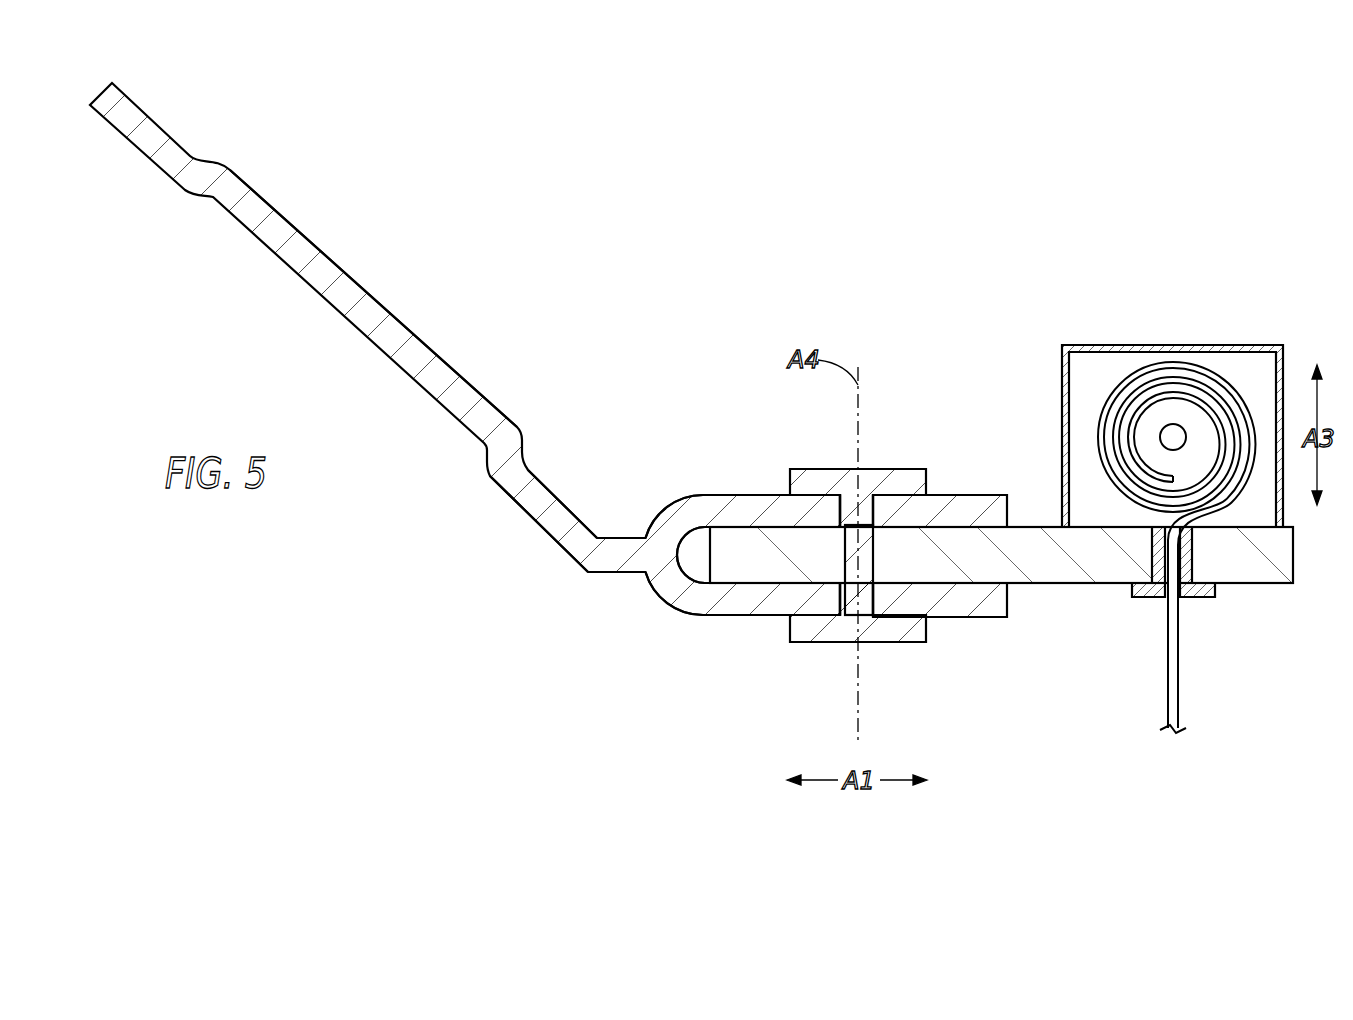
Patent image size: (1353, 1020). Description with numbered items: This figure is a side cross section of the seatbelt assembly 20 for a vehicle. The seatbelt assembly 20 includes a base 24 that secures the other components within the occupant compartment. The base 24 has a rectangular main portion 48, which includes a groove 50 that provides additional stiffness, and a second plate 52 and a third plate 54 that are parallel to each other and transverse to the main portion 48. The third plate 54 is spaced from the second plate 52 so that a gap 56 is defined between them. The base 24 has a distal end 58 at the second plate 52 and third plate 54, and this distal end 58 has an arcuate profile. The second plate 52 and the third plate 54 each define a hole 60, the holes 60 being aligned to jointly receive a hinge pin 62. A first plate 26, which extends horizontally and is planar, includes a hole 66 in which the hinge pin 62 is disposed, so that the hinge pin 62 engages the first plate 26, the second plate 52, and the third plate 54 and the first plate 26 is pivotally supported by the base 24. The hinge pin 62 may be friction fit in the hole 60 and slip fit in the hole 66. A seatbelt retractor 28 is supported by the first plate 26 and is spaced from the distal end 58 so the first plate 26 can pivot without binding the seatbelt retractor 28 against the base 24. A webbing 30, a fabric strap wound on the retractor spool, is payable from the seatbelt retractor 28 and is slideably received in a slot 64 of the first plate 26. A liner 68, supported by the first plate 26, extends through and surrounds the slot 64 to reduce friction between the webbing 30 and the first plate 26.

The seatbelt assembly 20 is at (773, 233).
The base 24 is at (145, 138).
The first plate 26 is at (1033, 563).
The seatbelt retractor 28 is at (1235, 345).
The webbing 30 is at (1165, 650).
The main portion 48 is at (540, 510).
The groove 50 is at (337, 263).
The second plate 52 is at (728, 494).
The third plate 54 is at (722, 602).
The gap 56 is at (697, 572).
The distal end 58 is at (1007, 510).
The hole 60 is at (878, 503).
The hinge pin 62 is at (818, 478).
The slot 64 is at (1195, 560).
The hole 66 is at (877, 548).
The liner 68 is at (1197, 600).